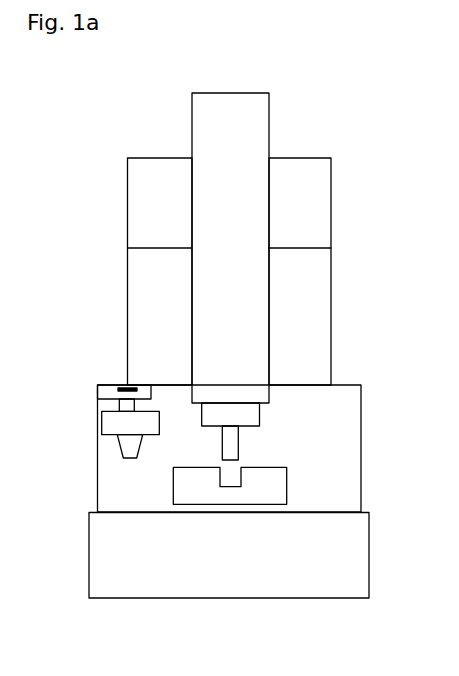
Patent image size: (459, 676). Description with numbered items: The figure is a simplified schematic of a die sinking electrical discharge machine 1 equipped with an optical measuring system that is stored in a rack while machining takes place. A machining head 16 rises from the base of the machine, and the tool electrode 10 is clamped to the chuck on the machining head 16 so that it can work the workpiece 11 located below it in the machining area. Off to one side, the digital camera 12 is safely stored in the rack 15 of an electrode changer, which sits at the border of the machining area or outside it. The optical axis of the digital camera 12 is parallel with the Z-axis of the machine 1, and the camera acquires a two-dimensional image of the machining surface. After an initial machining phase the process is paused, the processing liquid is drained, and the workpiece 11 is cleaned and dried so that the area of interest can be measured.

The die sinking electrical discharge machine 1 is at (68, 199).
The tool electrode 10 is at (240, 415).
The workpiece 11 is at (285, 490).
The digital camera 12 is at (100, 438).
The rack 15 is at (100, 402).
The machining head 16 is at (262, 143).